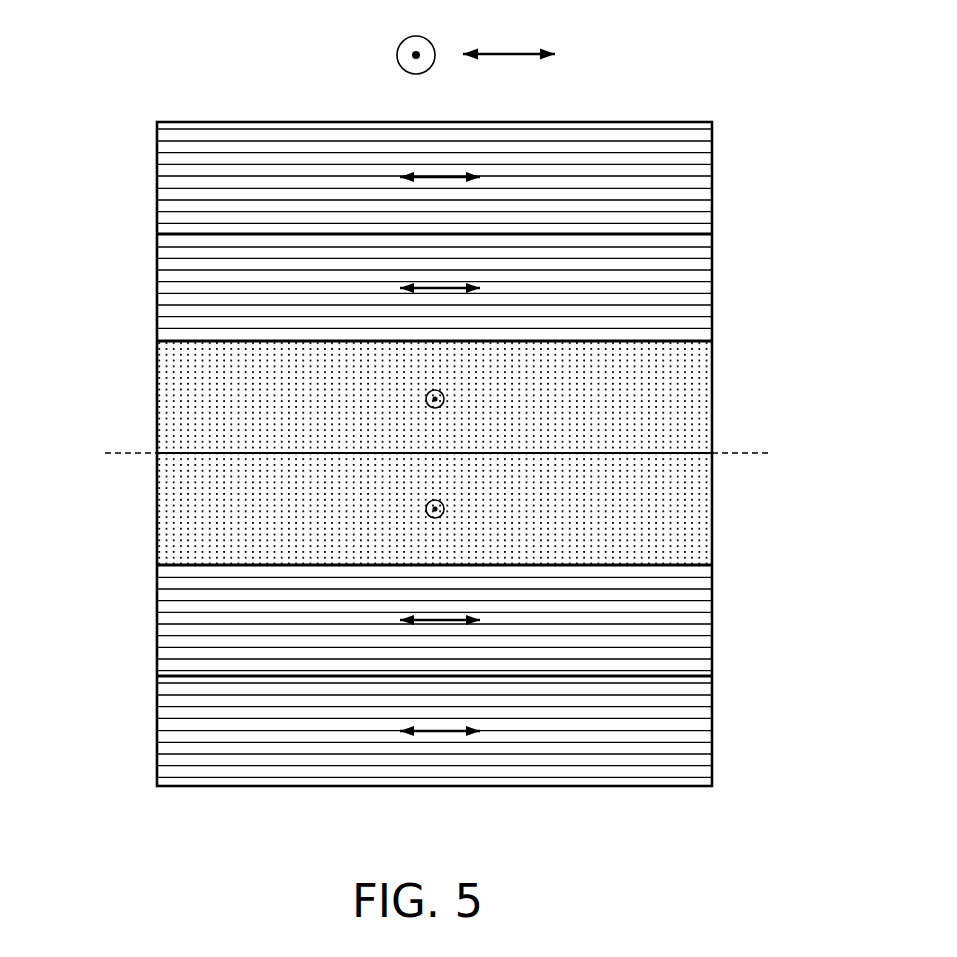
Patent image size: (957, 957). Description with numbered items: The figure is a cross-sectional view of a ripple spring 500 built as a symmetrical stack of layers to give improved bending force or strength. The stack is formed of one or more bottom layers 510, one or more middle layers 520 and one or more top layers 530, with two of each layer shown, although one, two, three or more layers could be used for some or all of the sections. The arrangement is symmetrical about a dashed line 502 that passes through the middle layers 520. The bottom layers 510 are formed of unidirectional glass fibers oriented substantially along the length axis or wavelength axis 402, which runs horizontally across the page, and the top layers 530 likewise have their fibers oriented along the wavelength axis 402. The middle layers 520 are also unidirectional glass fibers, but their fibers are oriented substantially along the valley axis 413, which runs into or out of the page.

The ripple spring 500 is at (684, 60).
The top layers 530 is at (712, 198).
The middle layers 520 is at (712, 418).
The bottom layers 510 is at (712, 640).
The dashed line 502 is at (117, 453).
The valley axis 413 is at (397, 56).
The length axis 402 is at (513, 54).